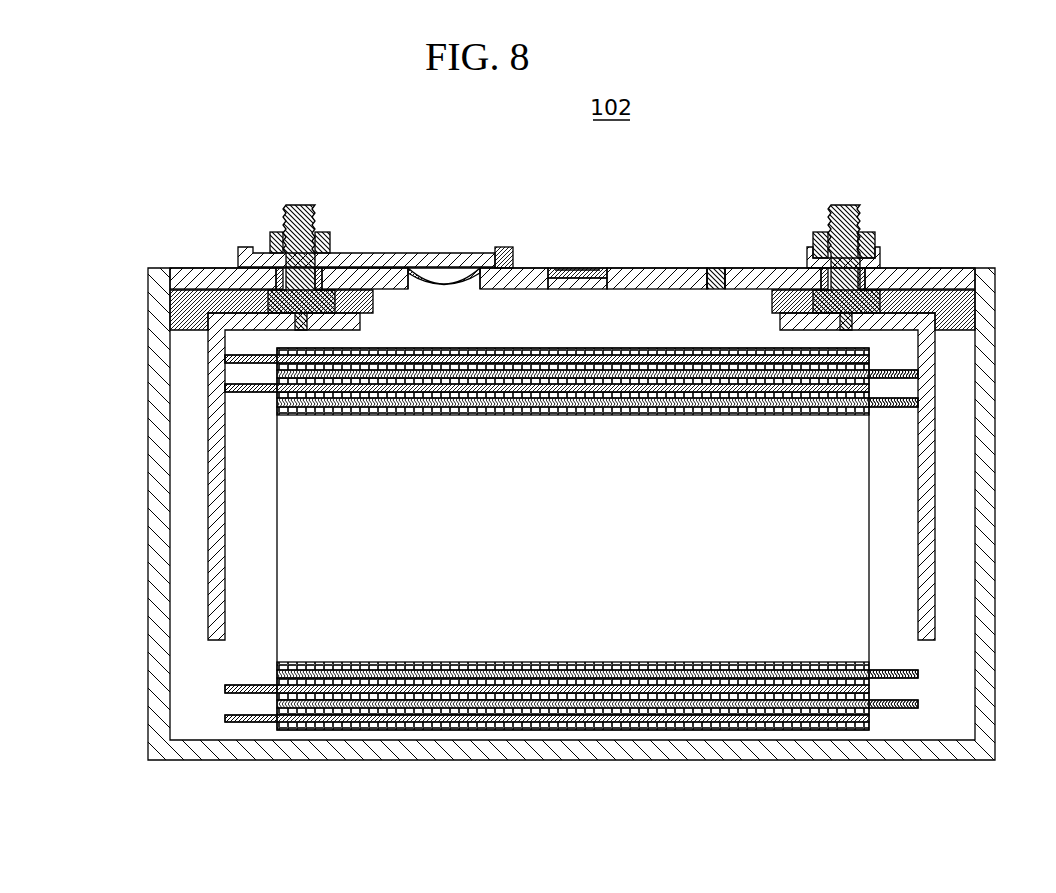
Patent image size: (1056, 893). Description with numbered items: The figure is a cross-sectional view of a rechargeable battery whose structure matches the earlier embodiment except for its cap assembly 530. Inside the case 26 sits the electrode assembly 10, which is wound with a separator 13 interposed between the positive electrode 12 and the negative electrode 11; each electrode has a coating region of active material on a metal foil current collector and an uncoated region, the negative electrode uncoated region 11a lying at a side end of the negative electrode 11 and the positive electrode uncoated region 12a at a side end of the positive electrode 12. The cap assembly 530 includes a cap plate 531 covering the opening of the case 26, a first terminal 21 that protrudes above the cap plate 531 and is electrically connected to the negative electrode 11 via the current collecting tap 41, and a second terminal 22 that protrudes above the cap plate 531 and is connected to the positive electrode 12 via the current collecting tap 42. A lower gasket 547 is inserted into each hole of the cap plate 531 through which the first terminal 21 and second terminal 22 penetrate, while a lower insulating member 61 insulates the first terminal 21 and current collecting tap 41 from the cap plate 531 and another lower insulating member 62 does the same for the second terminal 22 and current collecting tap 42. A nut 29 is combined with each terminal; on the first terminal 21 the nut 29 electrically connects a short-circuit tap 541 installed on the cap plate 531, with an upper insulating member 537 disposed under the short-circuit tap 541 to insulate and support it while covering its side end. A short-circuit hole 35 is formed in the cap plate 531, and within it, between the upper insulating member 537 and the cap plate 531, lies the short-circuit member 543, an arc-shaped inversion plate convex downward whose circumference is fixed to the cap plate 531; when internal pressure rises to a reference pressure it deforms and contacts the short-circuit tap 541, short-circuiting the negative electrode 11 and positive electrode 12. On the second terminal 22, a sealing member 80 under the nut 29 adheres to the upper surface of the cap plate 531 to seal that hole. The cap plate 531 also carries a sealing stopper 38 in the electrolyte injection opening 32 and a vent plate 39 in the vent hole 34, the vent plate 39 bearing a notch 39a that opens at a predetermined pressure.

The electrode assembly 10 is at (575, 584).
The negative electrode 11 is at (547, 584).
The negative electrode uncoated region 11a is at (275, 721).
The positive electrode 12 is at (601, 591).
The positive electrode uncoated region 12a is at (905, 709).
The separator 13 is at (590, 700).
The first terminal 21 is at (296, 205).
The second terminal 22 is at (843, 205).
The case 26 is at (978, 455).
The nut 29 is at (323, 238).
The electrolyte injection opening 32 is at (710, 276).
The vent hole 34 is at (580, 290).
The short-circuit hole 35 is at (447, 266).
The sealing stopper 38 is at (715, 268).
The vent plate 39 is at (589, 245).
The notch 39a is at (575, 268).
The current collecting tap 41 is at (206, 508).
The current collecting tap 42 is at (936, 568).
The lower insulating member 61 is at (178, 312).
The lower insulating member 62 is at (955, 305).
The sealing member 80 is at (806, 262).
The cap assembly 530 is at (586, 247).
The cap plate 531 is at (945, 279).
The upper insulating member 537 is at (503, 249).
The short-circuit tap 541 is at (388, 256).
The short-circuit member 543 is at (443, 277).
The lower gasket 547 is at (272, 278).